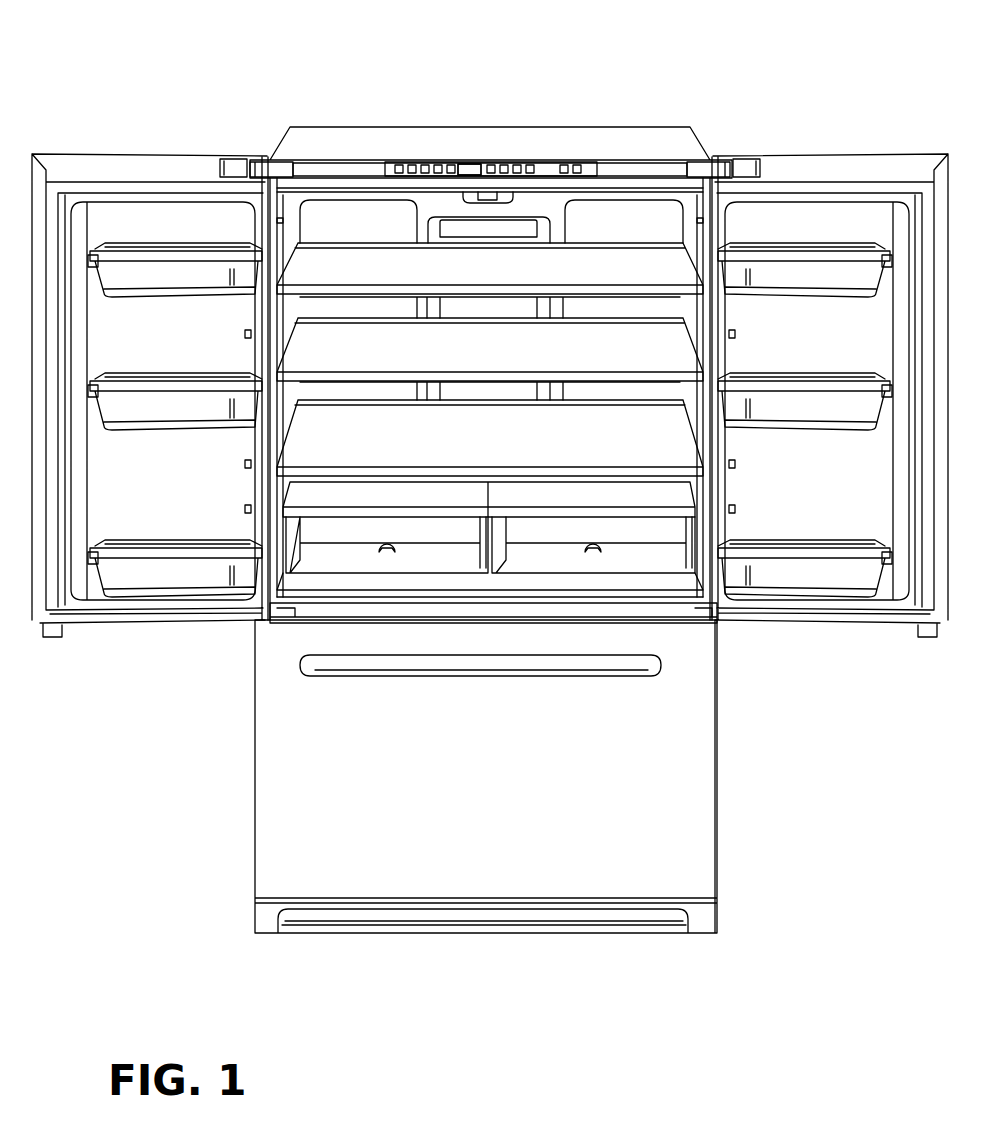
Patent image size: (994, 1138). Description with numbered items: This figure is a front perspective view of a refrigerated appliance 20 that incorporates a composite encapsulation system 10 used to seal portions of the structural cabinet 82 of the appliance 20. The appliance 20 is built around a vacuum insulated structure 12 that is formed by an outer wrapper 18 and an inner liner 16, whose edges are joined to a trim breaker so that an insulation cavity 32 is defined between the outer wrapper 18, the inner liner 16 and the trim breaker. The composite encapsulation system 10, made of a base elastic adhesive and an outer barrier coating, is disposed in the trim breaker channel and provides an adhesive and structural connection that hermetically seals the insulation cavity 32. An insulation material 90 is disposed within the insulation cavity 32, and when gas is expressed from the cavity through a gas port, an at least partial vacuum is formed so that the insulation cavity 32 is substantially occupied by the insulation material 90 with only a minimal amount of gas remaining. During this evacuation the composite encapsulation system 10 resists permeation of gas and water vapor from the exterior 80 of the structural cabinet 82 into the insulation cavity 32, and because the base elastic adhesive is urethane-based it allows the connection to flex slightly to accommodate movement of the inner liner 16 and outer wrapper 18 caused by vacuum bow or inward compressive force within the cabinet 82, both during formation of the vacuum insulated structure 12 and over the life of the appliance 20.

The composite encapsulation system 10 is at (608, 158).
The vacuum insulated structure 12 is at (339, 117).
The inner liner 16 is at (694, 212).
The outer wrapper 18 is at (403, 150).
The appliance 20 is at (189, 62).
The insulation cavity 32 is at (310, 604).
The exterior 80 is at (518, 148).
The structural cabinet 82 is at (257, 150).
The insulation material 90 is at (662, 606).